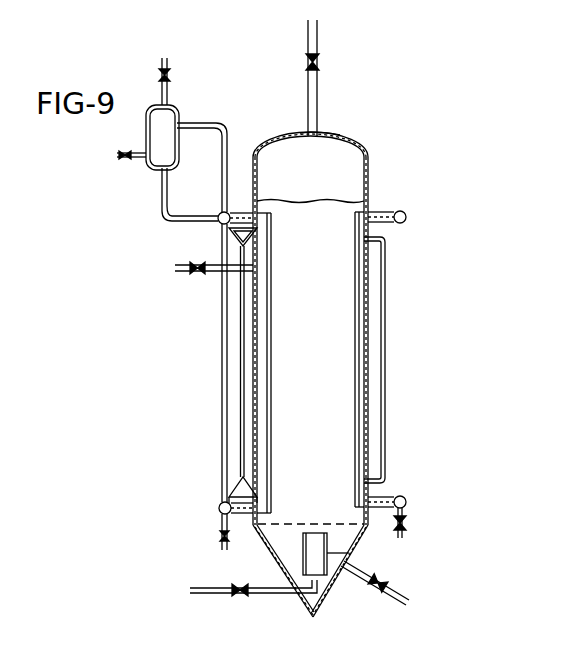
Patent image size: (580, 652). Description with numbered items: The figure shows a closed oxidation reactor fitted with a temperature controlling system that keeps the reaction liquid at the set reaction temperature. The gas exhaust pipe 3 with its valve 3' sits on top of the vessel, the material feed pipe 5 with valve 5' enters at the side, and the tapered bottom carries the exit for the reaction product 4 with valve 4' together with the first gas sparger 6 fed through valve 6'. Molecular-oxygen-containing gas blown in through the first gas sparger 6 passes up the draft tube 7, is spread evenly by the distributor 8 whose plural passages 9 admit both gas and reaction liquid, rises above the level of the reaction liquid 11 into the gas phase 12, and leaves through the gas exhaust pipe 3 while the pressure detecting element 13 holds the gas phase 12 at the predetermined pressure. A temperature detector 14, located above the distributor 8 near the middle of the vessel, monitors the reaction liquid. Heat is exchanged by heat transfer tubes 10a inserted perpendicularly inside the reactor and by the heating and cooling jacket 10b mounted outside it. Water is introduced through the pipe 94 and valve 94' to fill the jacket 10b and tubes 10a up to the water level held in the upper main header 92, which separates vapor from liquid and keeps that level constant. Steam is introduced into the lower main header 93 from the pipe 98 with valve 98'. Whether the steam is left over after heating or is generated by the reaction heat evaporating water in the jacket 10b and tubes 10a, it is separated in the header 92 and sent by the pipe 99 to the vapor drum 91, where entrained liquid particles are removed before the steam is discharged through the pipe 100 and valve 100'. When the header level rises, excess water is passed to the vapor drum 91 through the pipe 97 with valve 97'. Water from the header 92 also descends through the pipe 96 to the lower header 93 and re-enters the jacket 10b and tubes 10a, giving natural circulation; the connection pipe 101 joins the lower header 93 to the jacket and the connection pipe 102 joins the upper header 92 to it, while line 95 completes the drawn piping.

The gas exhaust pipe 3 is at (318, 78).
The valve 3' is at (320, 64).
The exit for the reaction product 4 is at (375, 583).
The valve 4' is at (389, 584).
The material feed pipe 5 is at (214, 280).
The valve 5' is at (197, 279).
The first gas sparger 6 is at (253, 599).
The valve 6' is at (238, 601).
The draft tube 7 is at (352, 566).
The distributor 8 is at (372, 497).
The passages 9 is at (352, 525).
The heat transfer tubes 10a is at (271, 330).
The heating and cooling jacket 10b is at (247, 317).
The level of the reaction liquid 11 is at (310, 187).
The gas phase 12 is at (347, 160).
The pressure detecting element 13 is at (333, 141).
The temperature detector 14 is at (315, 371).
The vapor drum 91 is at (162, 137).
The upper main header 92 is at (406, 215).
The lower main header 93 is at (220, 512).
The pipe 94 is at (131, 194).
The valve 94' is at (117, 167).
The line 95 is at (190, 204).
The pipe 96 is at (212, 363).
The pipe 97 is at (237, 535).
The valve 97' is at (204, 553).
The pipe 98 is at (419, 503).
The valve 98' is at (411, 523).
The pipe 99 is at (212, 167).
The pipe 100 is at (180, 81).
The valve 100' is at (180, 75).
The connection pipe 101 is at (246, 481).
The connection pipe 102 is at (233, 245).